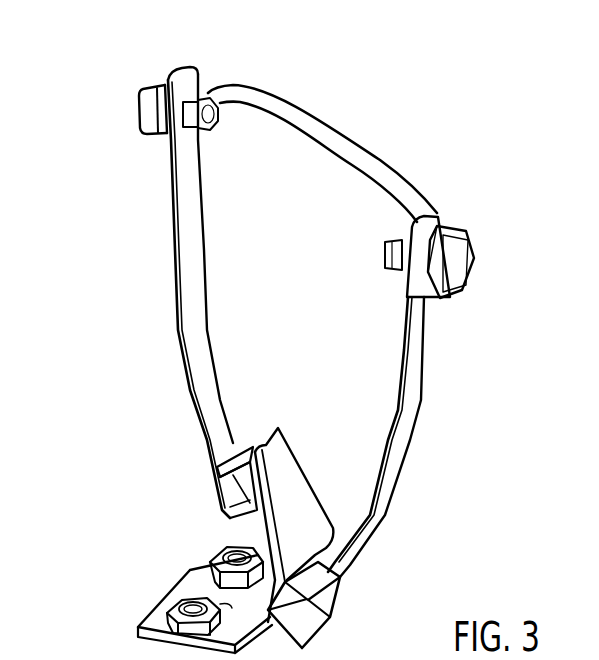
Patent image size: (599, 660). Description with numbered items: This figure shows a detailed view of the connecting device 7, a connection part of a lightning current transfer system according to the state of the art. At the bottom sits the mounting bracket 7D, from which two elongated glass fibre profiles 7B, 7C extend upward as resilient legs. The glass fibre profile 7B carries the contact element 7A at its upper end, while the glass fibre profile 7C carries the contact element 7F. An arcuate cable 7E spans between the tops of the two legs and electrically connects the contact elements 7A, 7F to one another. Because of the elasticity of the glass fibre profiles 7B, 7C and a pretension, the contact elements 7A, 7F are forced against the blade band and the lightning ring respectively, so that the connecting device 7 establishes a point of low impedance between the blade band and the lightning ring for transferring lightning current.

The connecting device 7 is at (330, 80).
The contact element 7A is at (155, 92).
The glass fibre profile 7B is at (150, 253).
The glass fibre profile 7C is at (432, 402).
The mounting bracket 7D is at (127, 615).
The cable 7E is at (380, 143).
The contact element 7F is at (483, 270).